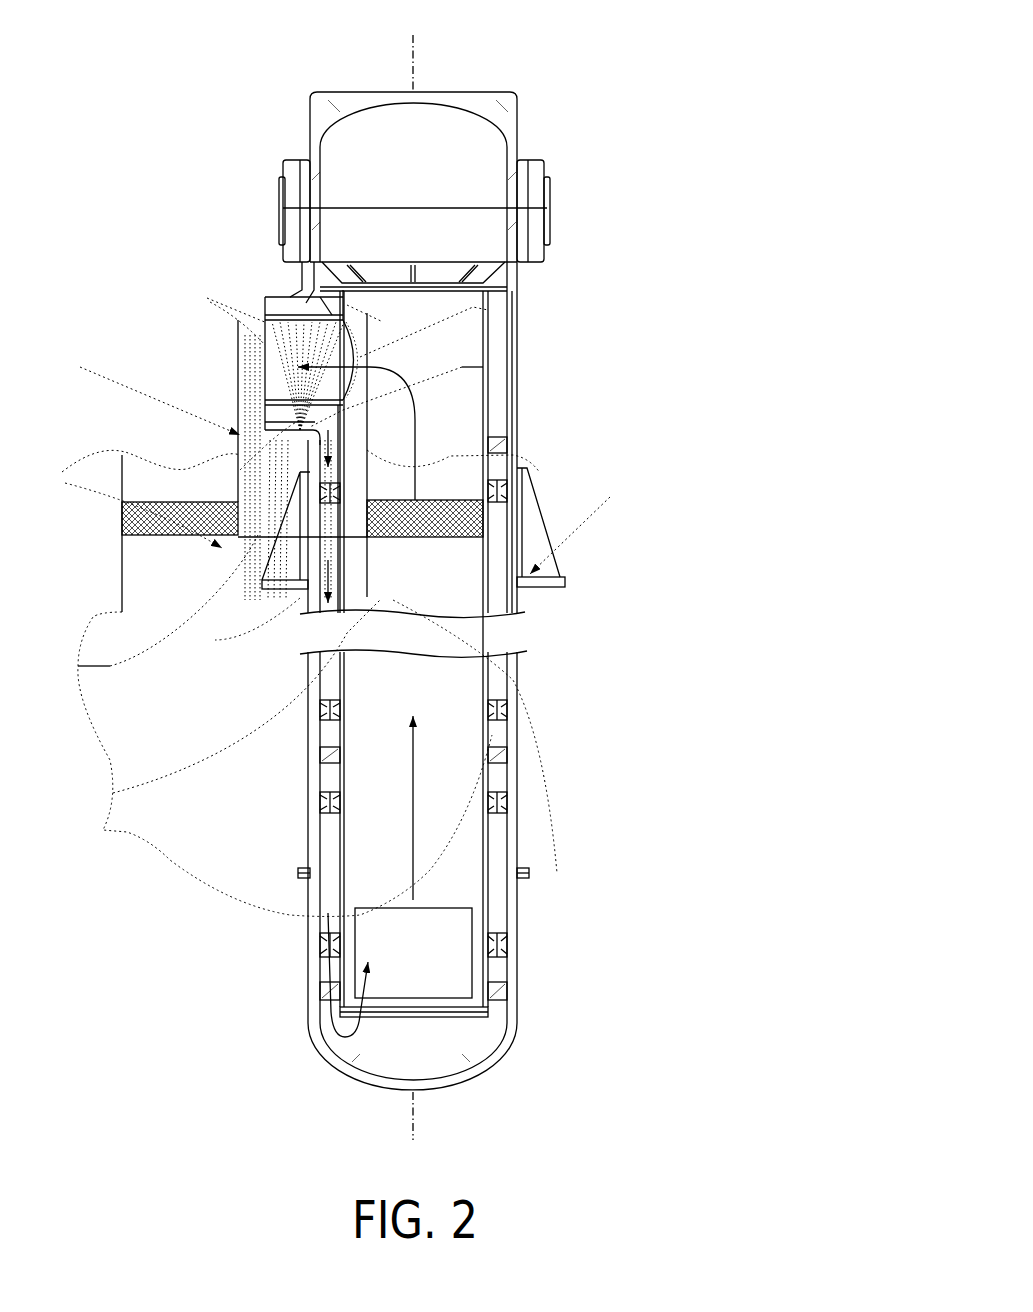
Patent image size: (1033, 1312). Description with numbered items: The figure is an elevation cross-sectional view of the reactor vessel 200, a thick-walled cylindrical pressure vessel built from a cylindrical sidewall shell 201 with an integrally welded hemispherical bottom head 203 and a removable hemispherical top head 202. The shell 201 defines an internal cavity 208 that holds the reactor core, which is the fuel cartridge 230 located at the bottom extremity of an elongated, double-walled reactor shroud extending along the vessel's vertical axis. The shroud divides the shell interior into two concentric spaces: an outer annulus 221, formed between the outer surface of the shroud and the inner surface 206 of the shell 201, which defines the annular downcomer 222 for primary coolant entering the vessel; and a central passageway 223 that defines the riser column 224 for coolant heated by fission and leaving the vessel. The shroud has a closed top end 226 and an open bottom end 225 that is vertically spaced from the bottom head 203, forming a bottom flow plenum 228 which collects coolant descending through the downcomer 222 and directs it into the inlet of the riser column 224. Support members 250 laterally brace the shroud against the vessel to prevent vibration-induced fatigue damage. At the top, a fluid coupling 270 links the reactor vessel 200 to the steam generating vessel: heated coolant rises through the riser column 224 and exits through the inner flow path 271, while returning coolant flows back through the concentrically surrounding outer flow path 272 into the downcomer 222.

The reactor vessel 200 is at (468, 589).
The top head 202 is at (509, 103).
The closed top end 226 is at (378, 287).
The fluid coupling 270 is at (240, 276).
The inner flow path 271 is at (287, 348).
The outer flow path 272 is at (283, 413).
The cylindrical sidewall shell 201 is at (517, 412).
The outer annulus 221 is at (500, 682).
The support members 250 is at (513, 797).
The annular downcomer 222 is at (498, 842).
The riser column 224 is at (397, 795).
The passageway 223 is at (383, 876).
The fuel cartridge 230 is at (445, 962).
The inner surface 206 is at (502, 1018).
The internal cavity 208 is at (331, 1038).
The bottom flow plenum 228 is at (465, 1050).
The open bottom end 225 is at (382, 1029).
The bottom head 203 is at (439, 1098).